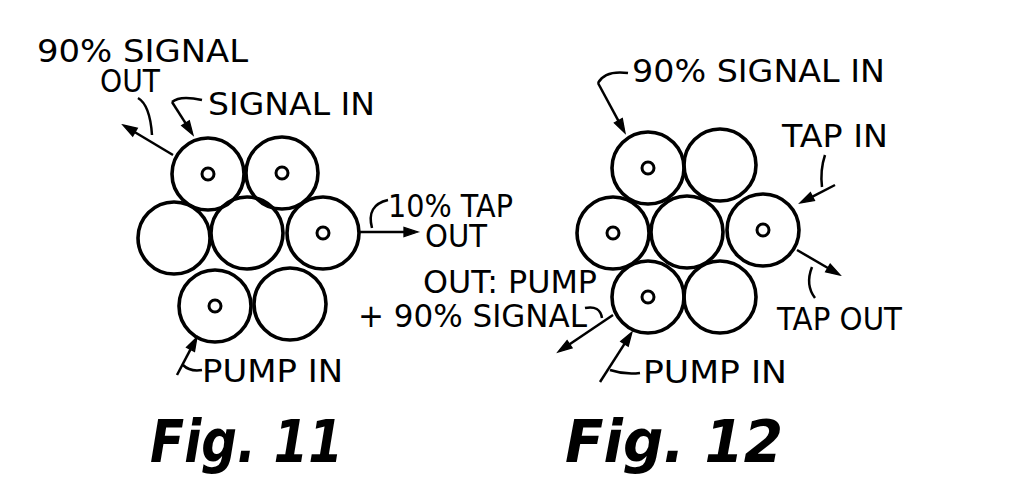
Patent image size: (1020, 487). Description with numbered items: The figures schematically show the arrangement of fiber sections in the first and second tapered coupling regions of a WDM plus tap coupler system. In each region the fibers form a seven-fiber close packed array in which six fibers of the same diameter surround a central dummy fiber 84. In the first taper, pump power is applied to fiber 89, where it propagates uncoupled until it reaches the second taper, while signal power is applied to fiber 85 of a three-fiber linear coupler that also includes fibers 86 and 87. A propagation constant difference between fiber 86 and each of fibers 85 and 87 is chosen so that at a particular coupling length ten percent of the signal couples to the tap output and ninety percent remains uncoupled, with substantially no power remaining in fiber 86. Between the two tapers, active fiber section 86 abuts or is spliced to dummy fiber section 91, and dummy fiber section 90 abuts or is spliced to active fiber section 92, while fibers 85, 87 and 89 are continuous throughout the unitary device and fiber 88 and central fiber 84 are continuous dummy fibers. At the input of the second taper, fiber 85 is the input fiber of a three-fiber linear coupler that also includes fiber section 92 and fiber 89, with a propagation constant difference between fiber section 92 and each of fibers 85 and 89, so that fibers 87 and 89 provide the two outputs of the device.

In FIG. 11, the central dummy fiber 84 is at (268, 250).
In FIG. 12, the central dummy fiber 84 is at (705, 245).
In FIG. 11, the signal input fiber 85 is at (173, 160).
In FIG. 12, the signal input fiber 85 is at (623, 137).
In FIG. 11, the active fiber section 86 is at (315, 145).
In FIG. 11, the tap output fiber 87 is at (340, 197).
In FIG. 12, the tap output fiber 87 is at (800, 228).
In FIG. 11, the dummy fiber 88 is at (328, 287).
In FIG. 12, the dummy fiber 88 is at (747, 330).
In FIG. 11, the pump input fiber 89 is at (178, 315).
In FIG. 12, the pump input fiber 89 is at (623, 325).
In FIG. 11, the dummy fiber section 90 is at (138, 233).
In FIG. 12, the dummy fiber section 91 is at (712, 128).
In FIG. 12, the active fiber section 92 is at (587, 203).